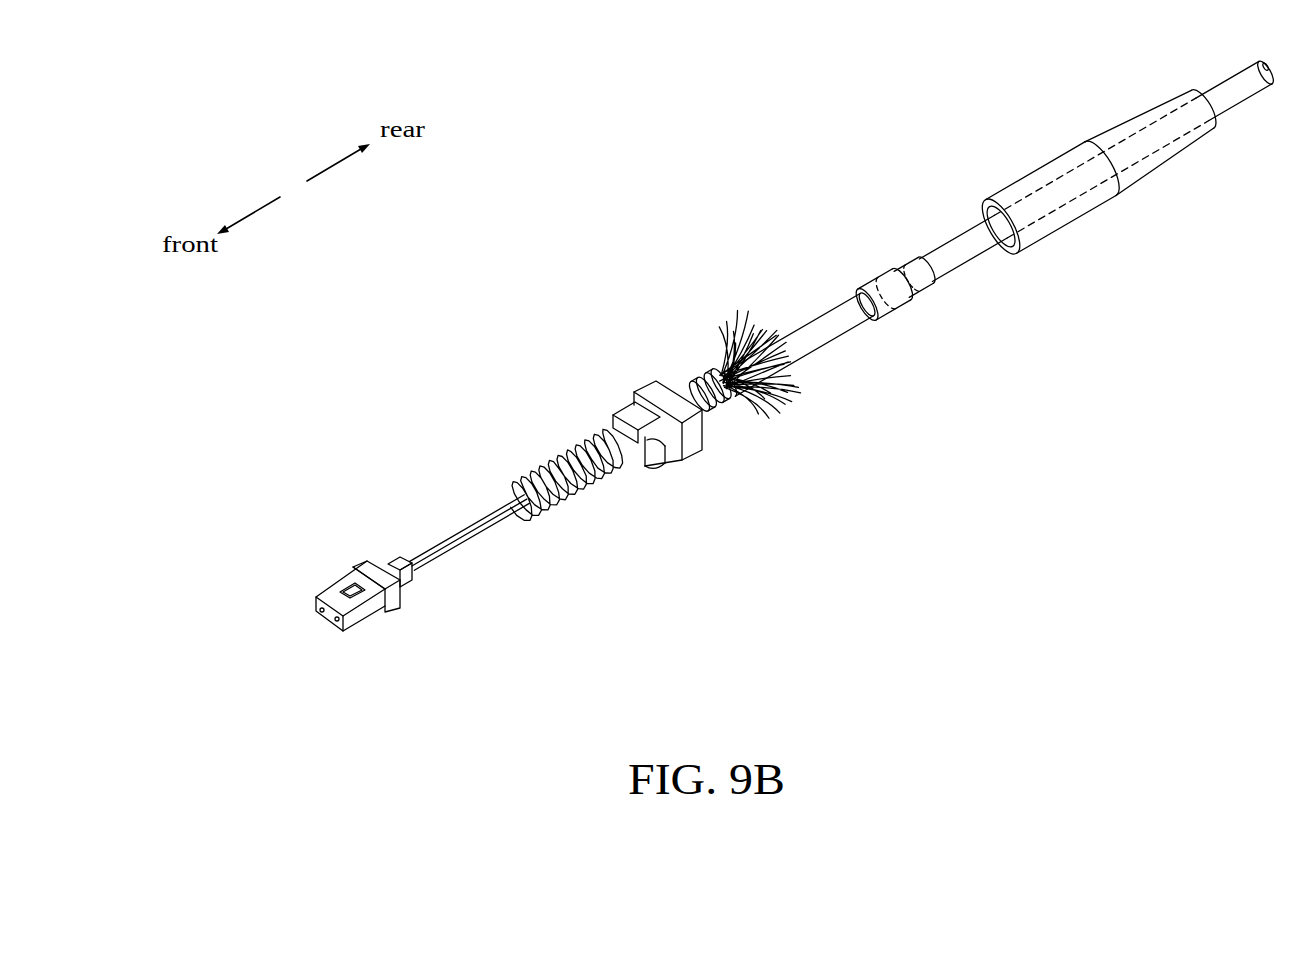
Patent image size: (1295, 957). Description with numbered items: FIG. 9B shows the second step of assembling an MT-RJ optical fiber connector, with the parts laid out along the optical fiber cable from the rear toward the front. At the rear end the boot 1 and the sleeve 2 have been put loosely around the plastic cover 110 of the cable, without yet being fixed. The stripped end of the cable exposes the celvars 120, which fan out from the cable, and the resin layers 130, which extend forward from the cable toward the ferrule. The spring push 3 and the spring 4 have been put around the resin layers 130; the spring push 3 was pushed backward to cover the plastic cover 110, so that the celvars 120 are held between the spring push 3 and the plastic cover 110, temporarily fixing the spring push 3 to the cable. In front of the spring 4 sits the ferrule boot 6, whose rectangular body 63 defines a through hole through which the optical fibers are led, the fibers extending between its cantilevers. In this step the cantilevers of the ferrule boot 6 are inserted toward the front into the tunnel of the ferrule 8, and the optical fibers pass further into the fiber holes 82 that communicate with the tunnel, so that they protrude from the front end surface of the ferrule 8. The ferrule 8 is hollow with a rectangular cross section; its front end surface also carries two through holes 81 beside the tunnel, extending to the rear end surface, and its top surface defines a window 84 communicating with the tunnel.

The boot 1 is at (1067, 230).
The sleeve 2 is at (893, 320).
The spring push 3 is at (672, 463).
The spring 4 is at (577, 500).
The ferrule boot 6 is at (412, 587).
The ferrule 8 is at (365, 627).
The rectangular body 63 is at (393, 563).
The through holes 81 is at (333, 623).
The fiber holes 82 is at (320, 615).
The window 84 is at (353, 586).
The plastic cover 110 is at (952, 247).
The celvars 120 is at (722, 327).
The resin layers 130 is at (467, 522).